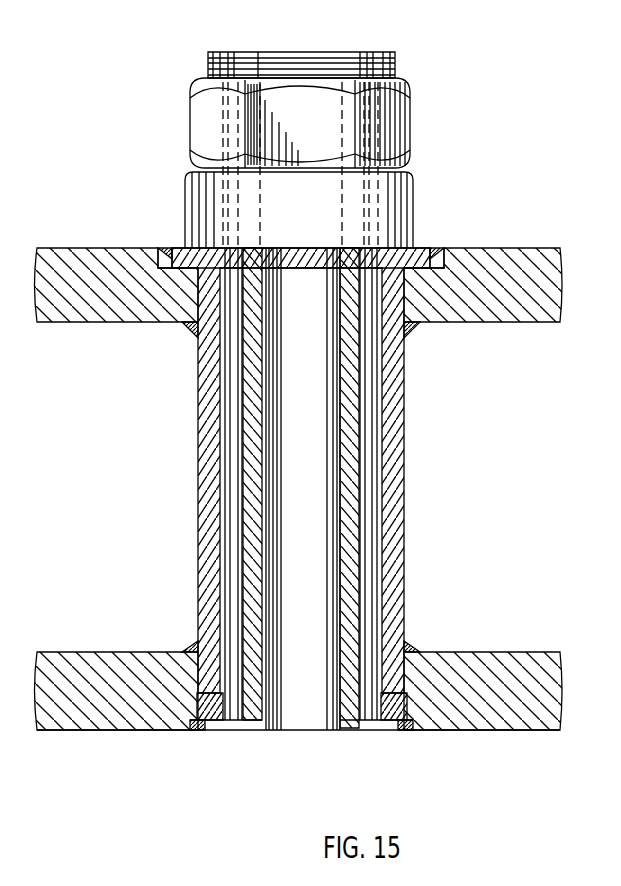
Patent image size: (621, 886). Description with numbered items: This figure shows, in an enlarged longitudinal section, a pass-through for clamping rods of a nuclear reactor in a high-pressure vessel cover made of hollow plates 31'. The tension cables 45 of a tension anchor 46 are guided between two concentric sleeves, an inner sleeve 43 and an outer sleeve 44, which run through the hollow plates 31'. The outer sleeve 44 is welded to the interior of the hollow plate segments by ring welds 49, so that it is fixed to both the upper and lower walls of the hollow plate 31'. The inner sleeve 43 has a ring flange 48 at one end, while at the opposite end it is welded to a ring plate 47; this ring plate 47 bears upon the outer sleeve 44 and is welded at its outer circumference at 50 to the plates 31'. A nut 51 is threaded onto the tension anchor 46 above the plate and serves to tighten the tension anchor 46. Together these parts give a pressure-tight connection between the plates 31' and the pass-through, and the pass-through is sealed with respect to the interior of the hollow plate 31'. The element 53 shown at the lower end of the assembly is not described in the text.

The hollow plates 31' is at (299, 495).
The inner sleeve 43 is at (260, 724).
The outer sleeve 44 is at (174, 250).
The tension cables 45 is at (368, 472).
The tension anchor 46 is at (408, 128).
The ring plate 47 is at (421, 247).
The ring flange 48 is at (232, 726).
The ring welds 49 is at (190, 332).
The weld 50 is at (167, 252).
The nut 51 is at (402, 76).
The seal ring 53 is at (216, 734).